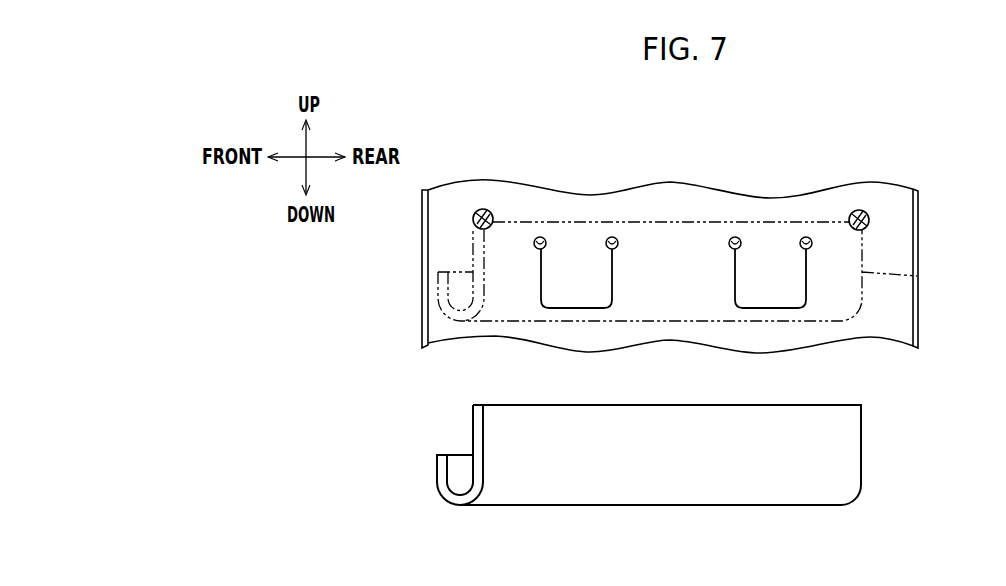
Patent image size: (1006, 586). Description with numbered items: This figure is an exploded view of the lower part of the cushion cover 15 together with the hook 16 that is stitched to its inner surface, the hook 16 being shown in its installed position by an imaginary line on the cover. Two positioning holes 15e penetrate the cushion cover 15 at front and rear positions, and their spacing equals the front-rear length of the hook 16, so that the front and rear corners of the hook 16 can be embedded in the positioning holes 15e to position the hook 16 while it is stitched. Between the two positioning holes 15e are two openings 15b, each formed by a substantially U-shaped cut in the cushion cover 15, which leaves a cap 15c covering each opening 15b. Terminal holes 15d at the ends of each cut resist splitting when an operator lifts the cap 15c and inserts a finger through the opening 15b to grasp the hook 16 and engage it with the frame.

The cushion cover 15 is at (918, 238).
The hook 16 is at (918, 275).
The opening 15b is at (575, 309).
The cap 15c is at (575, 275).
The terminal hole 15d is at (538, 237).
The positioning hole 15e is at (478, 209).